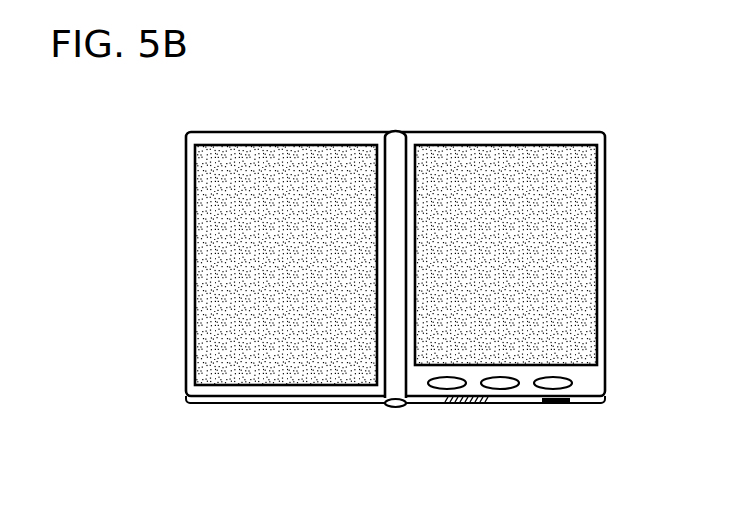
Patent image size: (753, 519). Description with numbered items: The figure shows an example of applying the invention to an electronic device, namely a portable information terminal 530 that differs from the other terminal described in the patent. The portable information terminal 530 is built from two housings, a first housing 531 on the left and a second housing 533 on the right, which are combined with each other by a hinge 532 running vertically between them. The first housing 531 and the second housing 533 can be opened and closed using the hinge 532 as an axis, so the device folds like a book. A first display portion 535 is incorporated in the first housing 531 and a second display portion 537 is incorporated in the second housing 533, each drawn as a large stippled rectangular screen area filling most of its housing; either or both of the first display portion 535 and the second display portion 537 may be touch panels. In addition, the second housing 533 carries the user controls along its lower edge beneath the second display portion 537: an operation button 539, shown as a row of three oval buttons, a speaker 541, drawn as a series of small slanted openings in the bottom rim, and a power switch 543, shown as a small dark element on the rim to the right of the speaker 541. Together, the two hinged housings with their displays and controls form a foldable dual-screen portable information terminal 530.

The portable information terminal 530 is at (413, 119).
The first housing 531 is at (193, 202).
The hinge 532 is at (398, 383).
The second housing 533 is at (600, 202).
The first display portion 535 is at (227, 295).
The second display portion 537 is at (567, 297).
The operation button 539 is at (538, 388).
The speaker 541 is at (458, 400).
The power switch 543 is at (543, 405).